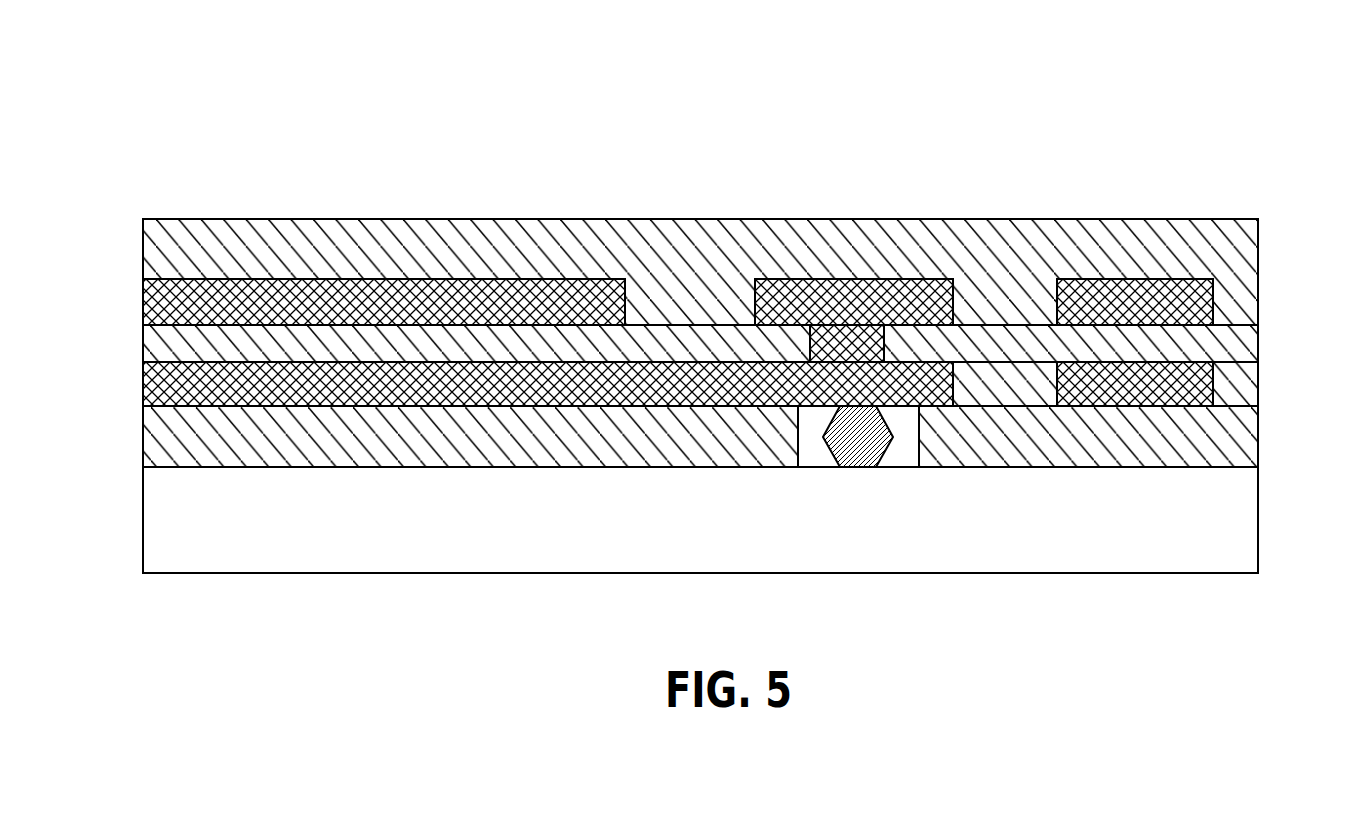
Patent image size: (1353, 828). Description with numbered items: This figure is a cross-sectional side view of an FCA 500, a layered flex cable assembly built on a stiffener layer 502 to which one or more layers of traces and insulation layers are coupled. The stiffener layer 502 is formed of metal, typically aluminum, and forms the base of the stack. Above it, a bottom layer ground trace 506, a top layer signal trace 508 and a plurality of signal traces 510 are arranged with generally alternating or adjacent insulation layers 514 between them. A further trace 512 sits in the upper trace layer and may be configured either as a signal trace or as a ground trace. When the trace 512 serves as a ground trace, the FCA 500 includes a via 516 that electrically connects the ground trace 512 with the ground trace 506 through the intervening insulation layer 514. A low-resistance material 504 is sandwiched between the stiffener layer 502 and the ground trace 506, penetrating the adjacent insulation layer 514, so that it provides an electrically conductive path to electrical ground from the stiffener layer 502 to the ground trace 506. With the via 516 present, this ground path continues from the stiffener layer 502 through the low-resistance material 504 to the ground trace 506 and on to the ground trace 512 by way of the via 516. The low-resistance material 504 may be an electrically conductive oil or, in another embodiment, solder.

The FCA 500 is at (254, 123).
The stiffener layer 502 is at (211, 551).
The low-resistance material 504 is at (867, 440).
The bottom layer ground trace 506 is at (158, 380).
The top layer signal trace 508 is at (158, 302).
The signal traces 510 is at (1210, 293).
The trace 512 is at (873, 307).
The insulation layers 514 is at (158, 253).
The via 516 is at (835, 345).